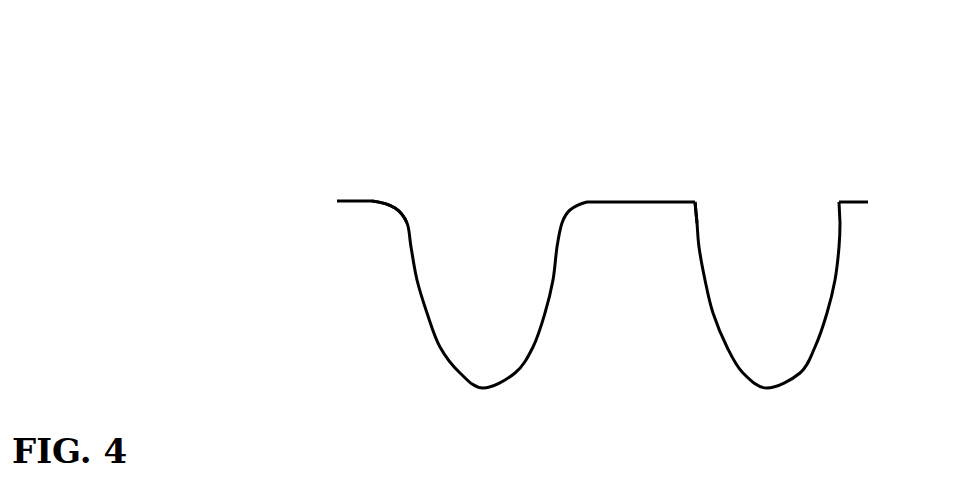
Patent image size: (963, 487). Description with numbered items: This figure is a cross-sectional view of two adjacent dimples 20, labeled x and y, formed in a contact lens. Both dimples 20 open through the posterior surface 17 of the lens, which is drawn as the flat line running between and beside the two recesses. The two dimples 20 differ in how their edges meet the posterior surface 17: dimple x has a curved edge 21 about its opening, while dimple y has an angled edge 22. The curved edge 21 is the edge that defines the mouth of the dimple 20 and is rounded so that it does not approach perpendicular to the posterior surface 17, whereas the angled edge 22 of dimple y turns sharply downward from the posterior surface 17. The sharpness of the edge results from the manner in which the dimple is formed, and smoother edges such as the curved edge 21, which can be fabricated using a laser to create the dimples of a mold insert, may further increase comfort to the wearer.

The posterior surface 17 is at (357, 197).
The dimple 20 is at (472, 211).
The curved edge 21 is at (390, 197).
The angled edge 22 is at (693, 193).